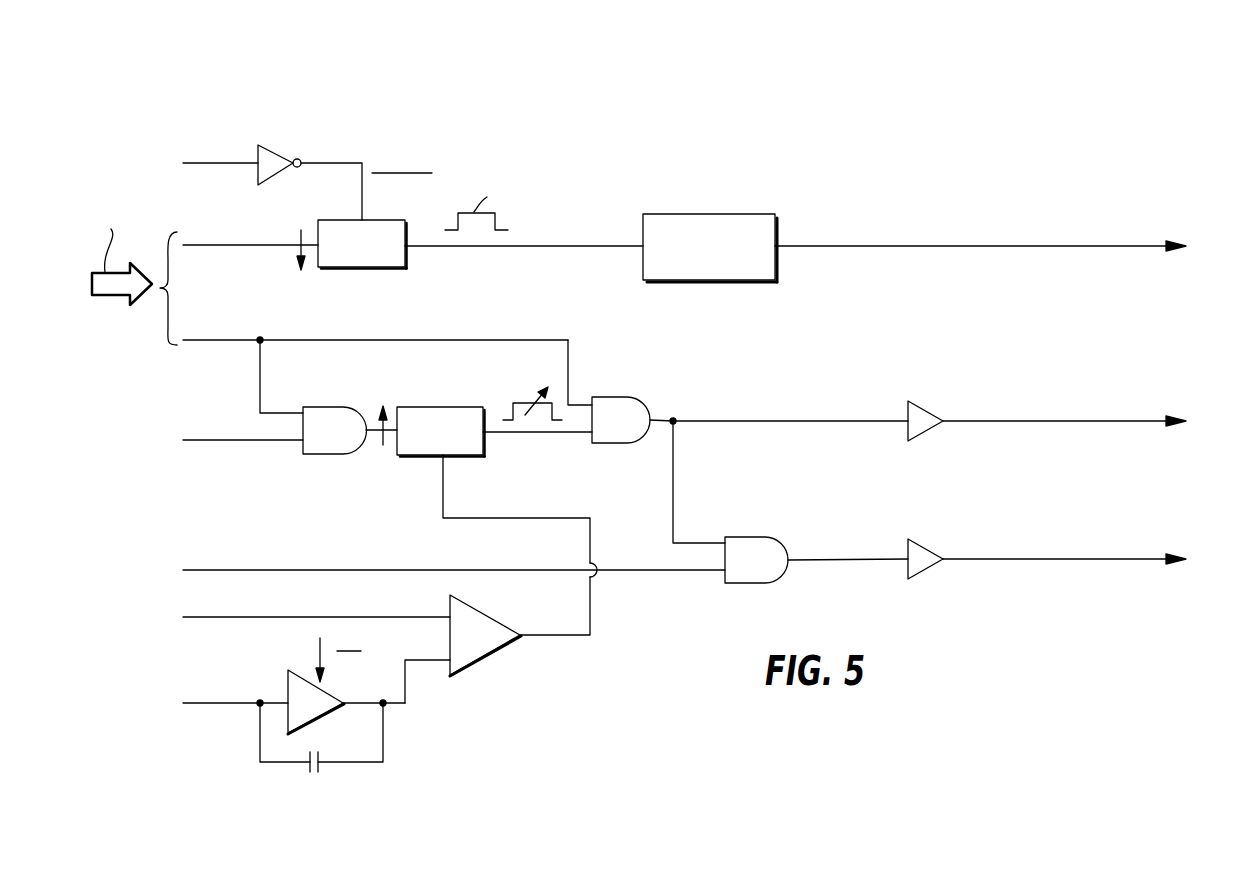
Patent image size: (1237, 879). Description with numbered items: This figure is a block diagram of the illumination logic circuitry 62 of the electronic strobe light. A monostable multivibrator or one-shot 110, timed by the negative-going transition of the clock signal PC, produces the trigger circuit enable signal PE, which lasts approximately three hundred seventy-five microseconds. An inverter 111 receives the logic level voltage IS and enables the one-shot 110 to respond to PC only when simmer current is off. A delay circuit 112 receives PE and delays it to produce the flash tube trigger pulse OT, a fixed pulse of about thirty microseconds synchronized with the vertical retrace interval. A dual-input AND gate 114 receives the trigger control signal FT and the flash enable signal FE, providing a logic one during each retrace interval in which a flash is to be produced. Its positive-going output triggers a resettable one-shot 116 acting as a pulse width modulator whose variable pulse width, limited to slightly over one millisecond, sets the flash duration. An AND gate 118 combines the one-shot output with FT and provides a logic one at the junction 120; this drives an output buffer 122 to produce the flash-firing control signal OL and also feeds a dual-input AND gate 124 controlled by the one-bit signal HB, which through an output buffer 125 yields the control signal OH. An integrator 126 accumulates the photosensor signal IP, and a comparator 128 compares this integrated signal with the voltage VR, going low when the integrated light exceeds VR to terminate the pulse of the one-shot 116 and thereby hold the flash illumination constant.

The illumination logic circuitry 62 is at (797, 103).
The monostable multivibrator (one-shot) 110 is at (384, 267).
The inverter 111 is at (279, 152).
The delay circuit 112 is at (777, 262).
The dual-input AND gate 114 is at (345, 380).
The resettable one-shot 116 is at (456, 380).
The AND gate 118 is at (625, 443).
The junction 120 is at (673, 420).
The output buffer 122 is at (928, 419).
The dual-input AND gate 124 is at (768, 514).
The output buffer 125 is at (925, 552).
The integrator 126 is at (332, 712).
The comparator 128 is at (490, 648).